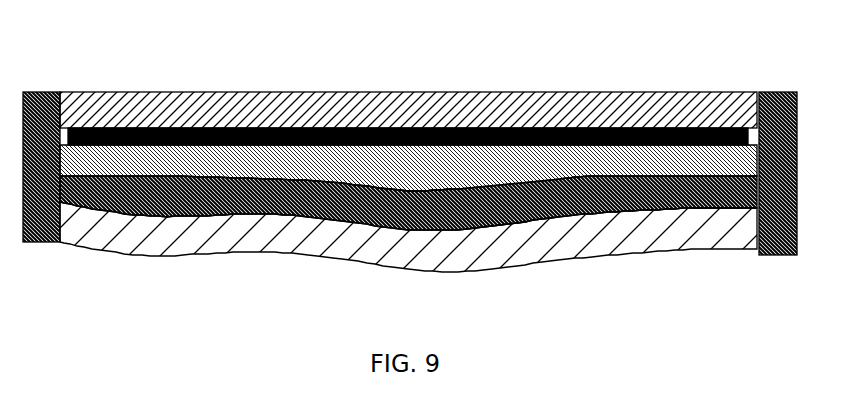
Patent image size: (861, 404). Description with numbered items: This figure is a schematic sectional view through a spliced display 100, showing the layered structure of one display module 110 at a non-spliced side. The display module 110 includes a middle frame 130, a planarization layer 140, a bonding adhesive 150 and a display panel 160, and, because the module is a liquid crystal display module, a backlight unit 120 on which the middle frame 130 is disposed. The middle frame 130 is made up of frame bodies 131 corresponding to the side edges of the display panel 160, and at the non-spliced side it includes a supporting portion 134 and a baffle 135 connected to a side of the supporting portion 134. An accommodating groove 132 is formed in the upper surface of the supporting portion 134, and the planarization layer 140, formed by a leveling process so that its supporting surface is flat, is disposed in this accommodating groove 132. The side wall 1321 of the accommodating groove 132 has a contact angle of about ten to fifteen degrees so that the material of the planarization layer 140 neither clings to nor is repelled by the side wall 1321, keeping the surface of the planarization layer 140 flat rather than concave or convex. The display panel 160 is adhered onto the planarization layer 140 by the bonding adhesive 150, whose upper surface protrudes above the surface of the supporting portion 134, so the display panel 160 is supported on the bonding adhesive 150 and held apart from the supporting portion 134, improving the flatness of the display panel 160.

The display module 100 is at (86, 46).
The display module 110 is at (413, 78).
The backlight unit 120 is at (170, 253).
The middle frame 130 is at (410, 210).
The frame body 131 is at (50, 242).
The accommodating groove 132 is at (395, 188).
The supporting portion 134 is at (515, 223).
The baffle 135 is at (780, 256).
The planarization layer 140 is at (232, 177).
The bonding adhesive 150 is at (297, 176).
The display panel 160 is at (330, 92).
The side wall 1321 is at (727, 212).